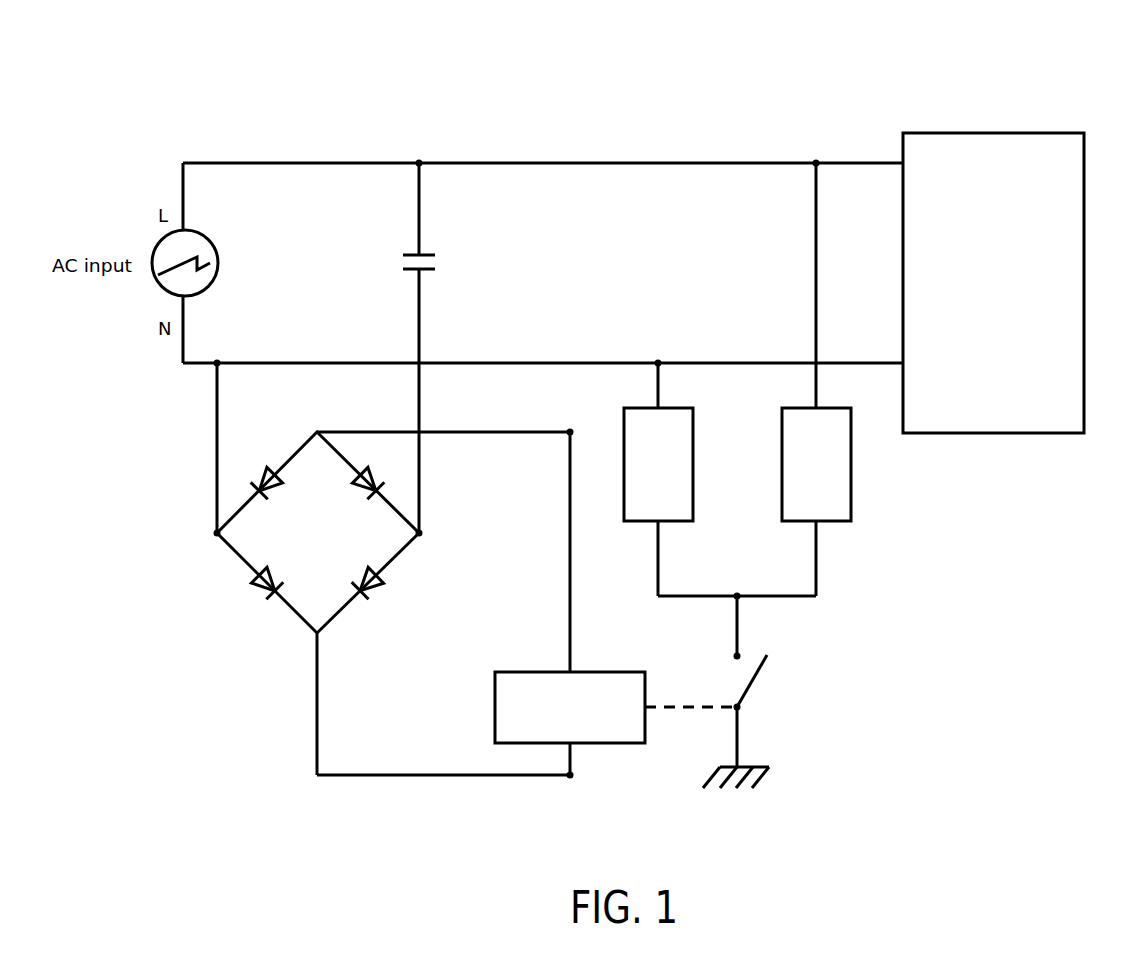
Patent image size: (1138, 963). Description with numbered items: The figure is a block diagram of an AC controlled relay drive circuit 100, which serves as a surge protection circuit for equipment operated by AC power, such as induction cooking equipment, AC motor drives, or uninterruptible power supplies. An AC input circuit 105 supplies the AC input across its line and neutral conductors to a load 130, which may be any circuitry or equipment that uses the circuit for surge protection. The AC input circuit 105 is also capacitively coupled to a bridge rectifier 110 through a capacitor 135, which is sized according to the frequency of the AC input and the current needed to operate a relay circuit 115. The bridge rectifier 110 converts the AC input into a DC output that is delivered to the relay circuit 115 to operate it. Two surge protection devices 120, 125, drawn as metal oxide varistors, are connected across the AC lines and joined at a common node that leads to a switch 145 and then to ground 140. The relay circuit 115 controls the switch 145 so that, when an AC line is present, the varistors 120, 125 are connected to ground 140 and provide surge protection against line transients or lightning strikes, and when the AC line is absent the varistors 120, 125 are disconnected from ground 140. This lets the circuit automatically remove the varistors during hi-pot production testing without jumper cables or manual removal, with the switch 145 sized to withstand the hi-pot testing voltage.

The AC controlled relay drive circuit 100 is at (270, 80).
The AC input circuit 105 is at (160, 290).
The bridge rectifier 110 is at (210, 576).
The relay circuit 115 is at (597, 745).
The surge protection device 120 is at (677, 522).
The surge protection device 125 is at (835, 522).
The load 130 is at (1028, 434).
The capacitor 135 is at (428, 250).
The ground 140 is at (770, 767).
The switch 145 is at (798, 681).